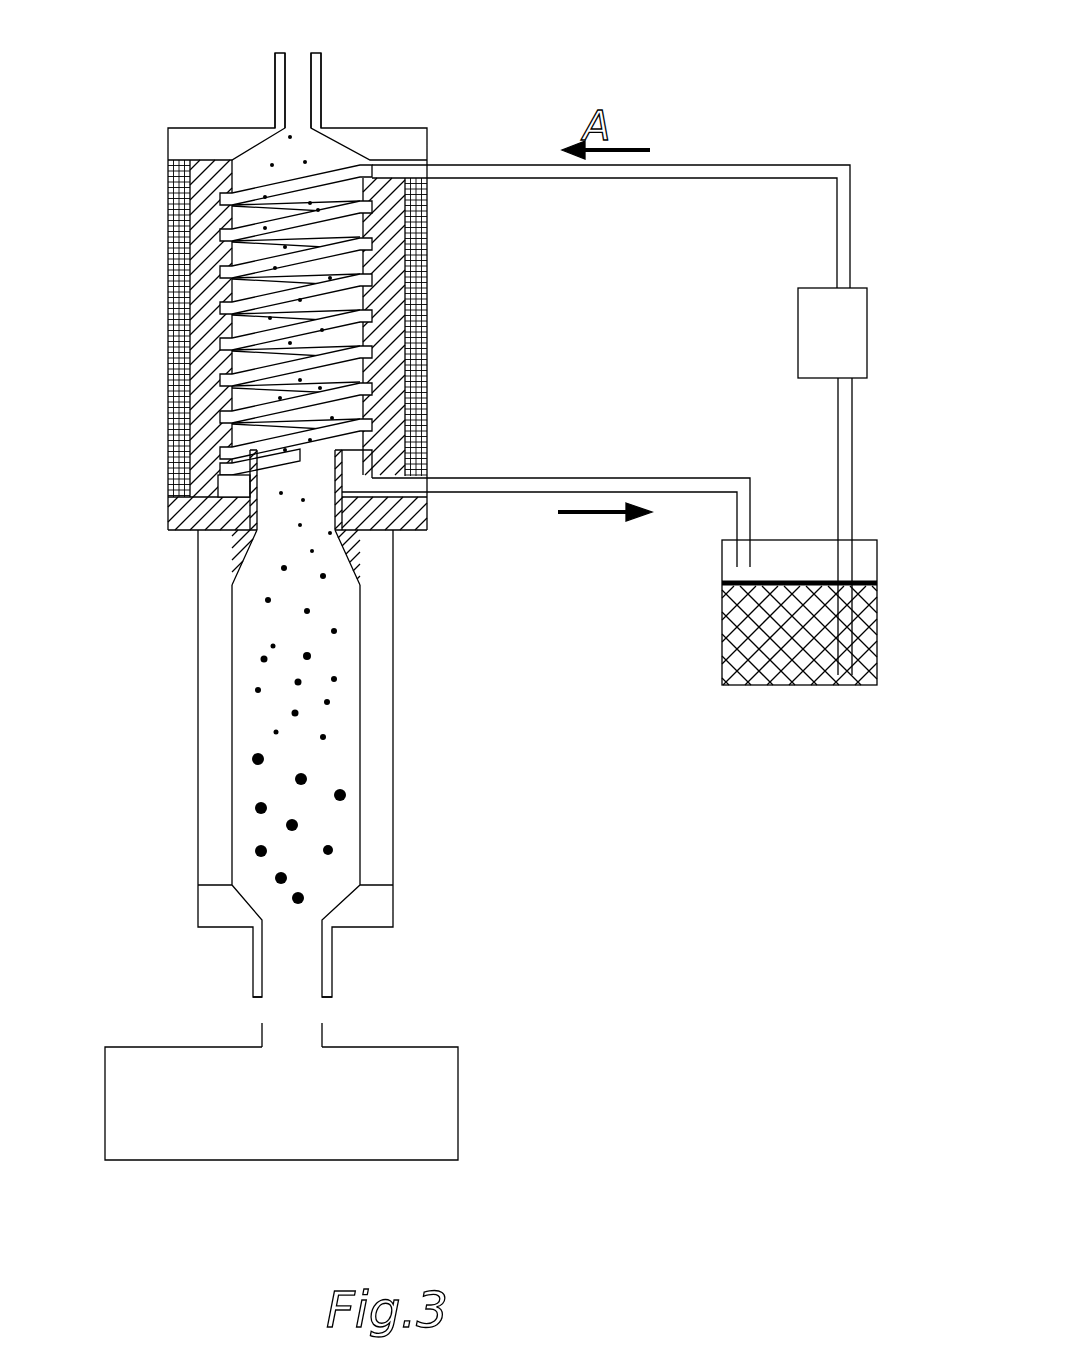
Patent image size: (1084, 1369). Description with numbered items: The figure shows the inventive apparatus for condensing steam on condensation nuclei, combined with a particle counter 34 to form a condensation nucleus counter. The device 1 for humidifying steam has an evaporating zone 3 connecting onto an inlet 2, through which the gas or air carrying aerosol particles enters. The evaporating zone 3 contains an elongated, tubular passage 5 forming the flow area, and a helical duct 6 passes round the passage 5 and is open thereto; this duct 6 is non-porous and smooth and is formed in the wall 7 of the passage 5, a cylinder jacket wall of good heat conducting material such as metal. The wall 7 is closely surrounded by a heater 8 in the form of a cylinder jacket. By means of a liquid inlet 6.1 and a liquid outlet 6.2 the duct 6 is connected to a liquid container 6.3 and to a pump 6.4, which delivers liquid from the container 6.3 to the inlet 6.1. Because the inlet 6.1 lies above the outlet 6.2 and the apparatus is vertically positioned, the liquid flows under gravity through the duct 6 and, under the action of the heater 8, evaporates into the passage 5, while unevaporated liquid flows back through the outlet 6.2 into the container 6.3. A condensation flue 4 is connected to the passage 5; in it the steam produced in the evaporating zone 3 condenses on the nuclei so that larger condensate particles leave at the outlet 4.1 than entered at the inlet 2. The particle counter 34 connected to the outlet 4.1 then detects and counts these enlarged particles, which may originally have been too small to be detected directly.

The device for humidifying steam 1 is at (312, 1001).
The inlet 2 is at (292, 44).
The evaporating zone 3 is at (150, 332).
The condensation flue 4 is at (412, 803).
The outlet 4.1 is at (333, 967).
The tubular passage 5 is at (293, 488).
The duct 6 is at (292, 238).
The liquid inlet 6.1 is at (447, 172).
The liquid outlet 6.2 is at (447, 486).
The liquid container 6.3 is at (768, 686).
The pump 6.4 is at (868, 337).
The wall 7 is at (207, 345).
The heater 8 is at (180, 422).
The particle counter 34 is at (447, 1107).